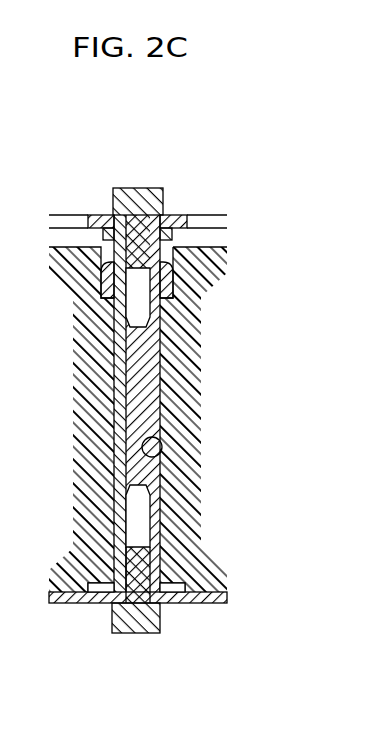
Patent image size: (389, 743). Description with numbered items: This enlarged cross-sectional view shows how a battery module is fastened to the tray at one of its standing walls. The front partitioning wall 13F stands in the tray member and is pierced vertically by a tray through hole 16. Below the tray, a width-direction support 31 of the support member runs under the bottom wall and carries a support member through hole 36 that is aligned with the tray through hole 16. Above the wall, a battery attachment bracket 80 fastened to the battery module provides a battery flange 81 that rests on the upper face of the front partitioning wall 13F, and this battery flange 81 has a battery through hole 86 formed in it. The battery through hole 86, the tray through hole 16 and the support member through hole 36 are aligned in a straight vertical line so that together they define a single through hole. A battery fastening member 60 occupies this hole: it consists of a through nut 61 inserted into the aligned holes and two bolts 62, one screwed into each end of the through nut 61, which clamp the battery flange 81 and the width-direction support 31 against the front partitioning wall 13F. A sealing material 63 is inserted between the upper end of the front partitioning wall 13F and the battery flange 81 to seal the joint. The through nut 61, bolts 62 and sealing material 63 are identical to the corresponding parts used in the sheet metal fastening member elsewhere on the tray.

The front partitioning wall 13F is at (49, 380).
The tray through hole 16 is at (150, 457).
The width-direction support 31 is at (198, 605).
The support member through hole 36 is at (140, 600).
The battery fastening member 60 is at (112, 420).
The through nut 61 is at (147, 386).
The bolt 62 is at (140, 188).
The sealing material 63 is at (172, 288).
The battery attachment bracket 80 is at (222, 213).
The battery flange 81 is at (187, 213).
The battery through hole 86 is at (118, 213).